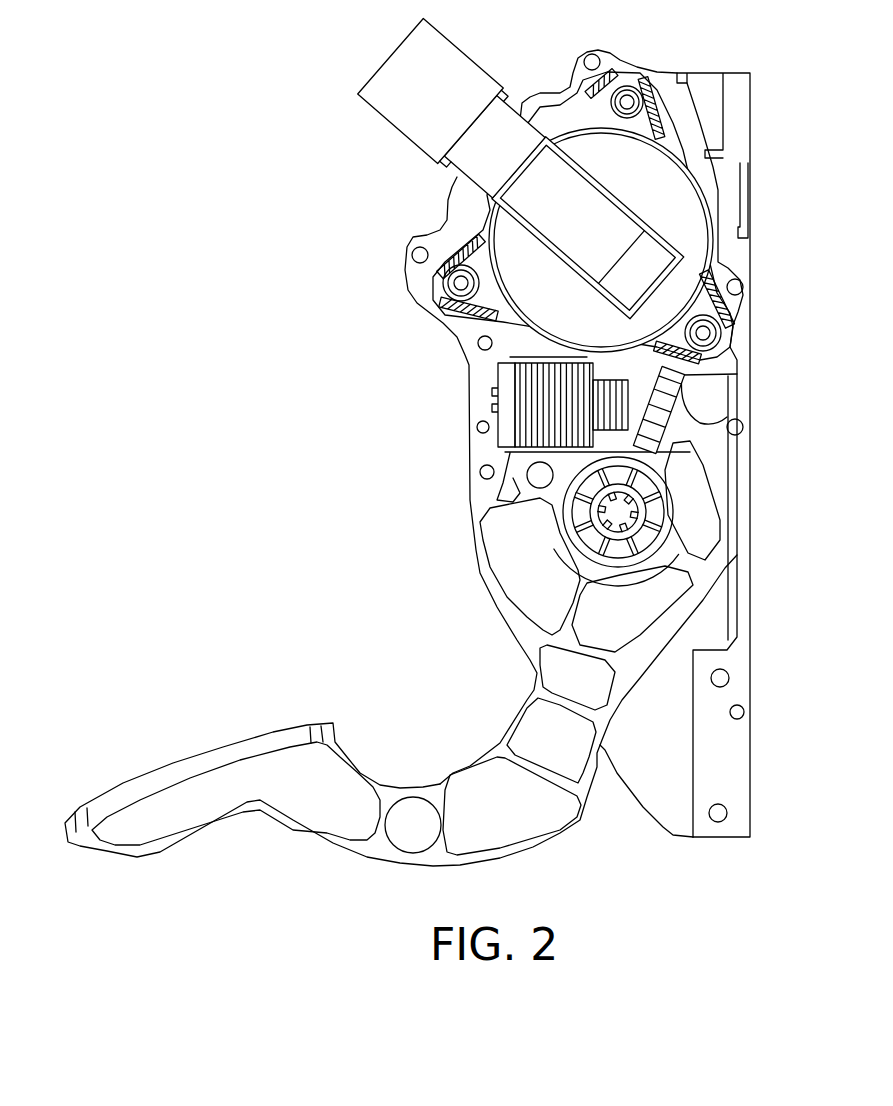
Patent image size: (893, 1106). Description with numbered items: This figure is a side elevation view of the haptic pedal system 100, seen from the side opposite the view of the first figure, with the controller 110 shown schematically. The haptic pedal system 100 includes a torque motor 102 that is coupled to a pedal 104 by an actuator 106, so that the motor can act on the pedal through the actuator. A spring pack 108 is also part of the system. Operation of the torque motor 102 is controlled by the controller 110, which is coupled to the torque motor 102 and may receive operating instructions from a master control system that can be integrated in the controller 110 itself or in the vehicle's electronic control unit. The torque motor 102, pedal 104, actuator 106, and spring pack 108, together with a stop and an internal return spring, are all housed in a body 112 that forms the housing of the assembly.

The haptic pedal system 100 is at (305, 316).
The torque motor 102 is at (494, 236).
The pedal 104 is at (192, 746).
The actuator 106 is at (665, 363).
The spring pack 108 is at (527, 420).
The controller 110 is at (393, 103).
The body 112 is at (480, 396).